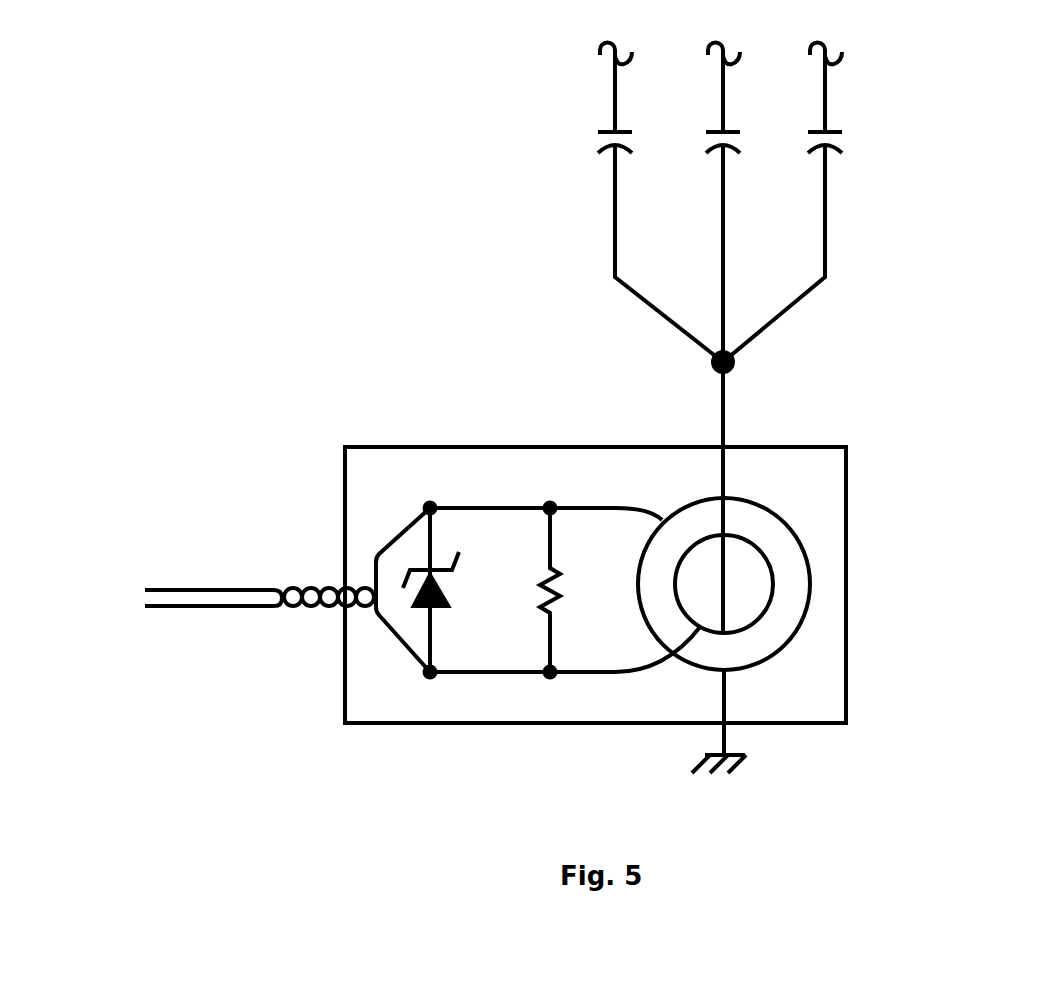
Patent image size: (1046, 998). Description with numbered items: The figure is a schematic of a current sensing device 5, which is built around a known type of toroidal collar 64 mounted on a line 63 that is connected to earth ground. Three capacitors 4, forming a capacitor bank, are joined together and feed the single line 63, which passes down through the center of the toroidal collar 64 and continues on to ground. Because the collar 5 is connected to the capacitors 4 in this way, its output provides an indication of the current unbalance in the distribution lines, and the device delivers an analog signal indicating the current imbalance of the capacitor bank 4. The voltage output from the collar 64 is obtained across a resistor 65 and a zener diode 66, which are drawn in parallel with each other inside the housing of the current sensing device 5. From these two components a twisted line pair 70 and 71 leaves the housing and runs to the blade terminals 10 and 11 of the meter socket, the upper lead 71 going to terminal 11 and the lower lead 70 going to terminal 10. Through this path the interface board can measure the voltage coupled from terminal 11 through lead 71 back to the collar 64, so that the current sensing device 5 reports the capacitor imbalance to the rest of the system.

The capacitors 4 is at (617, 130).
The current sensing device 5 is at (848, 477).
The blade terminal 10 is at (268, 588).
The blade terminal 11 is at (268, 610).
The line 63 is at (727, 410).
The toroidal collar 64 is at (763, 503).
The resistor 65 is at (558, 600).
The zener diode 66 is at (447, 599).
The twisted line pair lead 70 is at (402, 640).
The twisted line pair lead 71 is at (403, 535).